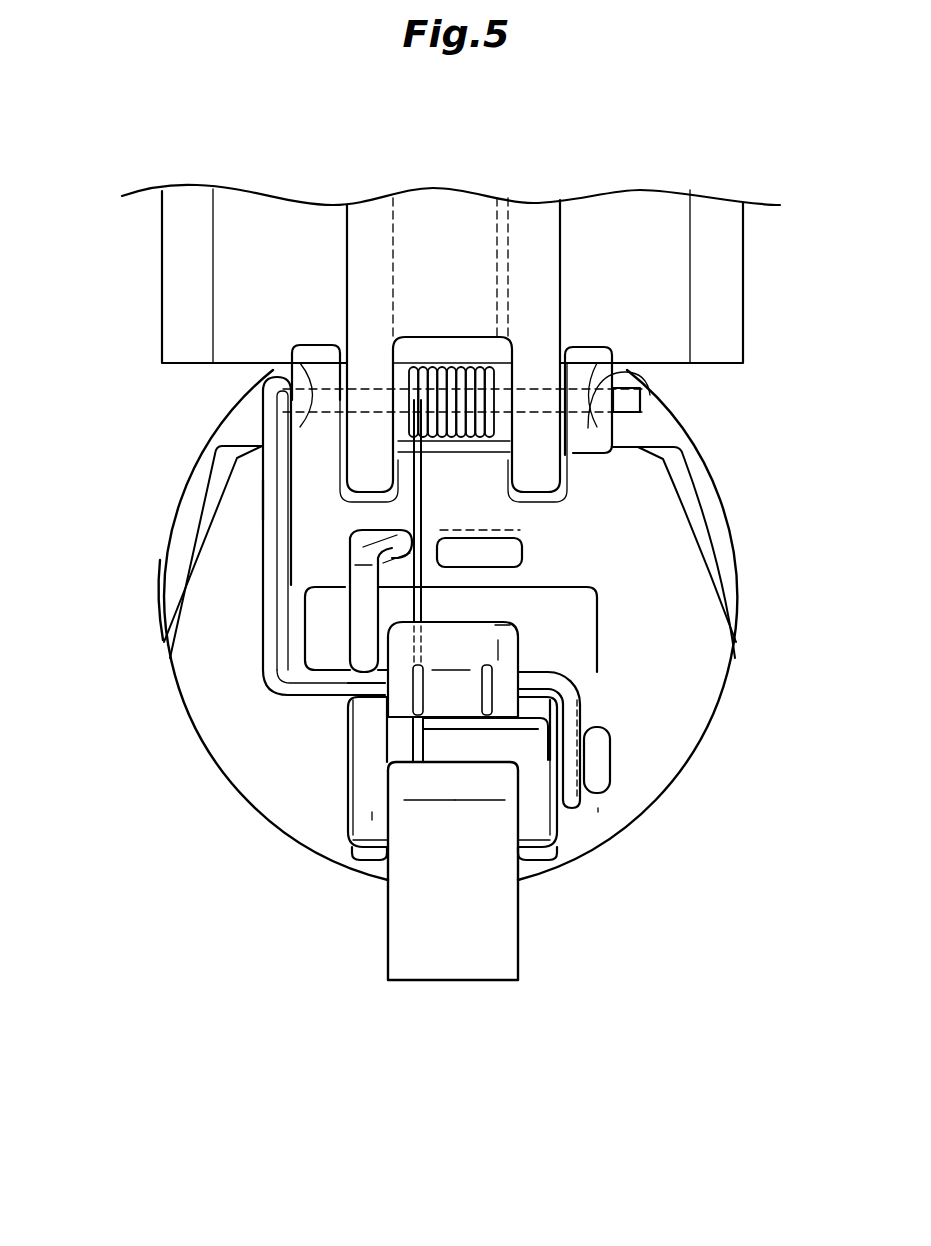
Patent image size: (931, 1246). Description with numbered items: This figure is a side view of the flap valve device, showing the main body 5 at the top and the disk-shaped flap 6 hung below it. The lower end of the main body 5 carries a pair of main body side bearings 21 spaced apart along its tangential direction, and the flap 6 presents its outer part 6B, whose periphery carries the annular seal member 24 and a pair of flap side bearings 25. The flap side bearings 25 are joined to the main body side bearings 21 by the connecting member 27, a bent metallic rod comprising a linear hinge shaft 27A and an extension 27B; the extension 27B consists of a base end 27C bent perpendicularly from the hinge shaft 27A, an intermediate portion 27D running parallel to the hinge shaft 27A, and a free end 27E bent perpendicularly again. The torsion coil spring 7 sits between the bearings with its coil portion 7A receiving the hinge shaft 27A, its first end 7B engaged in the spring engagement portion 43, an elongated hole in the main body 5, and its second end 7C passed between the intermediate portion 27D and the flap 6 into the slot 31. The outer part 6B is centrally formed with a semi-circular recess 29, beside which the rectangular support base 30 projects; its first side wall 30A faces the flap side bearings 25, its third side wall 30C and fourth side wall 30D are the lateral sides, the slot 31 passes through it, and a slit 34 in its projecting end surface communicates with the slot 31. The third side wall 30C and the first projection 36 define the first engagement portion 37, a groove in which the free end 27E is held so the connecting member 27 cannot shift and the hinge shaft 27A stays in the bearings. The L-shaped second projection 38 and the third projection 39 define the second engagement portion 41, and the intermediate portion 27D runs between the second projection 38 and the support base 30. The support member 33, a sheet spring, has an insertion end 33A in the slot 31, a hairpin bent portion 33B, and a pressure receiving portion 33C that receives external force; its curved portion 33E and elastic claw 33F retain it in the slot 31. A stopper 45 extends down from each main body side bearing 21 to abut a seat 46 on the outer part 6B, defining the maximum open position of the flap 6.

The main body 5 is at (150, 255).
The flap 6 is at (258, 815).
The outer part 6B is at (235, 750).
The torsion coil spring 7 is at (468, 365).
The coil portion 7A is at (440, 380).
The first end 7B is at (497, 225).
The second end 7C is at (421, 478).
The main body side bearings 21 is at (350, 375).
The seal member 24 is at (172, 553).
The flap side bearings 25 is at (318, 353).
The connecting member 27 is at (250, 607).
The hinge shaft 27A is at (630, 400).
The extension 27B is at (250, 673).
The base end 27C is at (266, 492).
The intermediate portion 27D is at (318, 695).
The free end 27E is at (585, 745).
The recess 29 is at (560, 625).
The support base 30 is at (378, 850).
The first side wall 30A is at (493, 729).
The third side wall 30C is at (552, 775).
The fourth side wall 30D is at (367, 723).
The slot 31 is at (530, 680).
The support member 33 is at (438, 985).
The insertion end 33A is at (500, 650).
The bent portion 33B is at (485, 965).
The pressure receiving portion 33C is at (400, 892).
The curved portion 33E is at (497, 622).
The elastic claw 33F is at (447, 693).
The slit 34 is at (372, 815).
The first projection 36 is at (610, 760).
The first engagement portion 37 is at (598, 808).
The second projection 38 is at (362, 578).
The third projection 39 is at (483, 547).
The second engagement portion 41 is at (400, 530).
The spring engagement portion 43 is at (398, 220).
The stopper 45 is at (665, 418).
The seats 46 is at (690, 475).